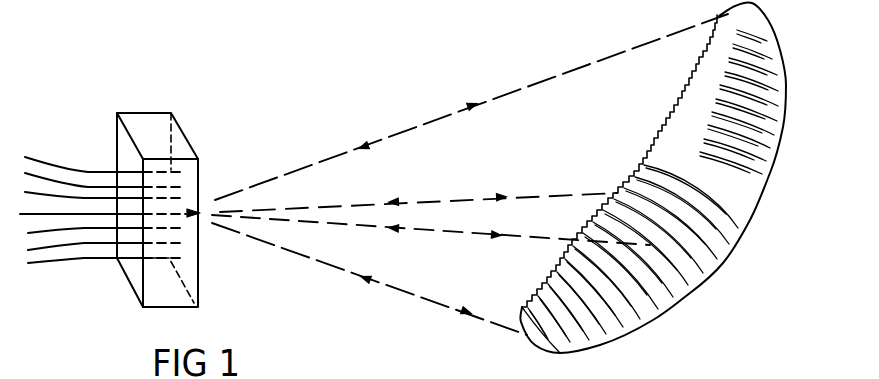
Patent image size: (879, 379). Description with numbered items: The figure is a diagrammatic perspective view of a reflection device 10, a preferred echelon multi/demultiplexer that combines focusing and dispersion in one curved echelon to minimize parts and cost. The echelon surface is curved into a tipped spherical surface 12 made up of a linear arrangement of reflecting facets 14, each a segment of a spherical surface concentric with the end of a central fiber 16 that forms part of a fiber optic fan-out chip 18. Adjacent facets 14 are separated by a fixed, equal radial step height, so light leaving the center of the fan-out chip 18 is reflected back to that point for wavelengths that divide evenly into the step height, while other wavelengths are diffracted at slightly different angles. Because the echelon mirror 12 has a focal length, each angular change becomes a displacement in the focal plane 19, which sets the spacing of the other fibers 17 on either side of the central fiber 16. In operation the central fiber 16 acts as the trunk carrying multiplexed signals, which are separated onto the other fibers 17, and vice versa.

The reflection device 10 is at (294, 87).
The tipped spherical surface 12 is at (740, 228).
The reflecting facets 14 is at (687, 292).
The central fiber 16 is at (78, 210).
The other fibers 17 is at (69, 197).
The fiber optic fan-out chip 18 is at (164, 113).
The focal plane 19 is at (200, 290).